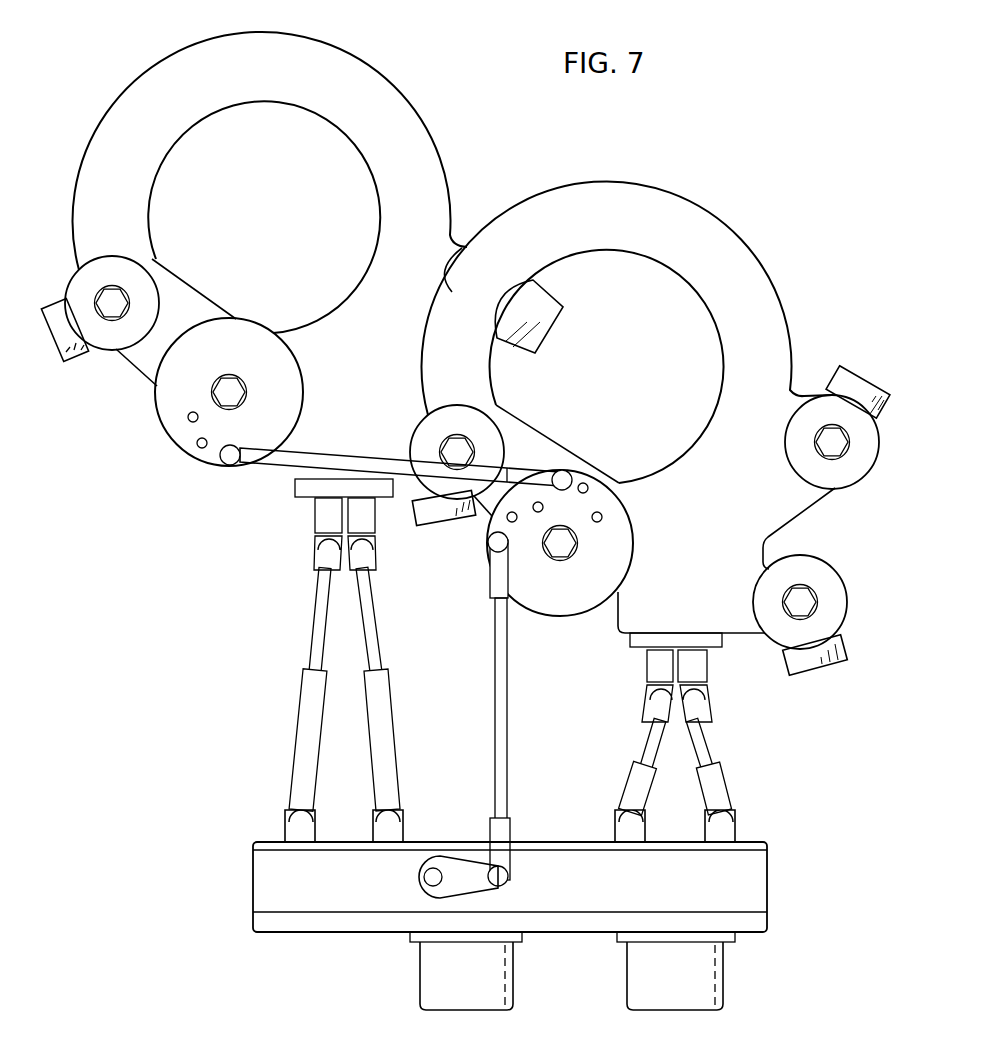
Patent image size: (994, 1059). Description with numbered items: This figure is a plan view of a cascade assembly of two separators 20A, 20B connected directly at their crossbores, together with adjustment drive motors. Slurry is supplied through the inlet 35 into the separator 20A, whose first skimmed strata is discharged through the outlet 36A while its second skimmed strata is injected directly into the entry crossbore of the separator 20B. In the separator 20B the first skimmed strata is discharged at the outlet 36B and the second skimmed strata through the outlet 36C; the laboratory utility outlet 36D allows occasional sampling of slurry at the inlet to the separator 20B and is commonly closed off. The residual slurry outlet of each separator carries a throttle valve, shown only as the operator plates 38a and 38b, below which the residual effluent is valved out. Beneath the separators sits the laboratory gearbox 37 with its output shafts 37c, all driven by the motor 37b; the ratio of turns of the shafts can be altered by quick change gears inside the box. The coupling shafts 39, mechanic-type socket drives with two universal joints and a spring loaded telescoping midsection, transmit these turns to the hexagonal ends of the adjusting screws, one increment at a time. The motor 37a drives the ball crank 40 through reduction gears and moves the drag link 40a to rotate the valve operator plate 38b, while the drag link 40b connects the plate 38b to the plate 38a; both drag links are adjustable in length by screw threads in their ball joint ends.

The separator 20A is at (366, 193).
The separator 20B is at (700, 356).
The inlet 35 is at (86, 309).
The outlet 36A is at (549, 316).
The outlet 36B is at (839, 420).
The outlet 36C is at (800, 628).
The laboratory utility outlet 36D is at (457, 482).
The operator plate 38a is at (258, 438).
The operator plate 38b is at (590, 593).
The coupling shafts 39 is at (326, 670).
The ball crank 40 is at (439, 877).
The drag link 40a is at (520, 709).
The drag link 40b is at (335, 452).
The laboratory gearbox 37 is at (613, 895).
The motor 37a is at (481, 990).
The motor 37b is at (694, 990).
The output shafts 37c is at (740, 832).